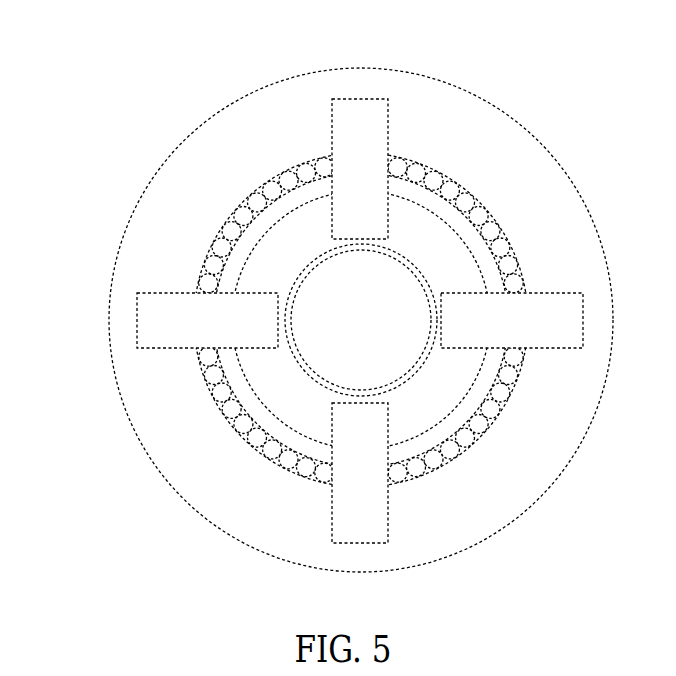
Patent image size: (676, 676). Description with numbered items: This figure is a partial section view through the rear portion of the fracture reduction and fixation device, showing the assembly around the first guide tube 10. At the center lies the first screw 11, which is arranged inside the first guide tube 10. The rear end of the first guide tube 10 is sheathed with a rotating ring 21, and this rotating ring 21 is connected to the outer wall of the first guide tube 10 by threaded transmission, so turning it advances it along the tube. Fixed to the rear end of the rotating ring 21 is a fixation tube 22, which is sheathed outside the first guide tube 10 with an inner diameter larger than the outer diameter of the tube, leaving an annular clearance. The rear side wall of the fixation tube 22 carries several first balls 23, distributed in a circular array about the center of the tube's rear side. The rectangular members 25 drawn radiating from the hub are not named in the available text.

The first guide tube 10 is at (265, 382).
The first screw 11 is at (370, 308).
The rotating ring 21 is at (165, 212).
The fixation tube 22 is at (310, 157).
The first balls 23 is at (247, 190).
The blade 25 is at (167, 320).